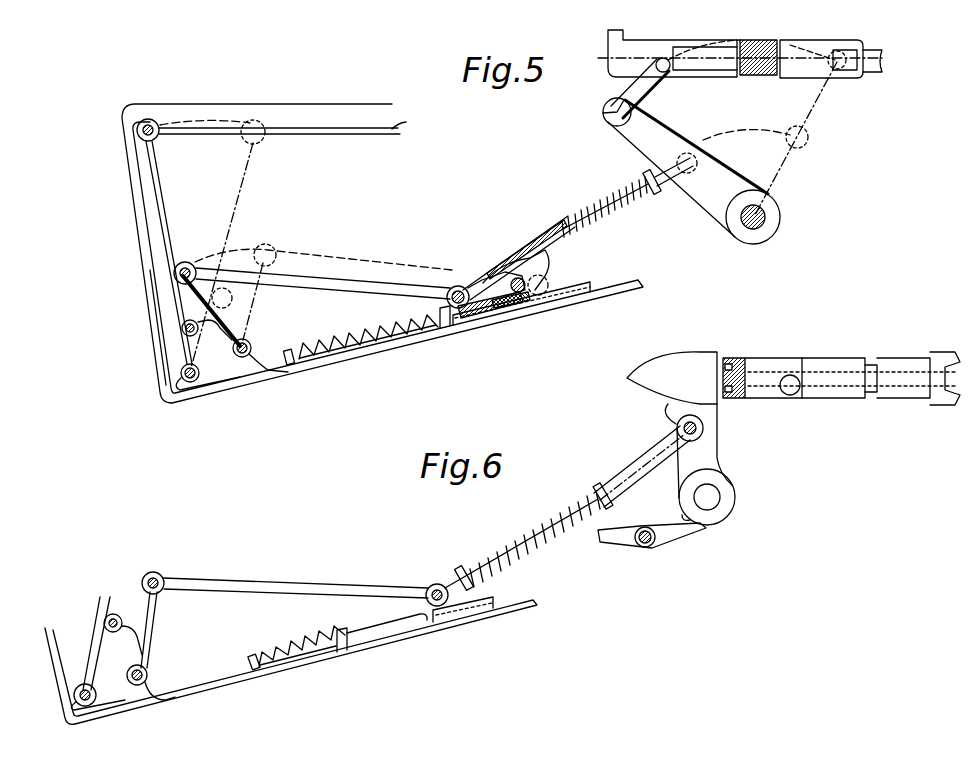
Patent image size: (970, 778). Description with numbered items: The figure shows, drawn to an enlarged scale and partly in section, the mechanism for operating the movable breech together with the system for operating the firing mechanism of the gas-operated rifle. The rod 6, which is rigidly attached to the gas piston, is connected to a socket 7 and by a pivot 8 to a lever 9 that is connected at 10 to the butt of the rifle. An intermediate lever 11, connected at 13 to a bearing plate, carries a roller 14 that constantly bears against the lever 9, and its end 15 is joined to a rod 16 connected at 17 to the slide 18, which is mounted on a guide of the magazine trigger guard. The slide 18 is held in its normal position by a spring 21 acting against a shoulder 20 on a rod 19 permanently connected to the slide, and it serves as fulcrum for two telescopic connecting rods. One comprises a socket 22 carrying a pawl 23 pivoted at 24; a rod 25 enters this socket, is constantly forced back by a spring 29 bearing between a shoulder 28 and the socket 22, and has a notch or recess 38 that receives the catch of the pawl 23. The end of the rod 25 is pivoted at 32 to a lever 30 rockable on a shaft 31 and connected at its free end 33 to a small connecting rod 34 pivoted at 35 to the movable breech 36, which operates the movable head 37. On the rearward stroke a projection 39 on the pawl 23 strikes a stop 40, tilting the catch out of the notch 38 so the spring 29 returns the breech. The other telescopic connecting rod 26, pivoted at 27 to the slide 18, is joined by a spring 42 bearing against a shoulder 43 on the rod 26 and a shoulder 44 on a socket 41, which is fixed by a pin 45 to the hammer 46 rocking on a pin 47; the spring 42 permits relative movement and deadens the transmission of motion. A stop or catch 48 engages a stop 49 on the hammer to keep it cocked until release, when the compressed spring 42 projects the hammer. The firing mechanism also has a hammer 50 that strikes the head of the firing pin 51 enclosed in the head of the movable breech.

In FIG. 5, the rod 6 is at (404, 128).
In FIG. 5, the socket 7 is at (170, 124).
In FIG. 5, the pivot 8 is at (153, 120).
In FIG. 5, the lever 9 is at (158, 200).
In FIG. 6, the lever 9 is at (96, 636).
In FIG. 5, the connection to butt 10 is at (200, 373).
In FIG. 6, the connection to butt 10 is at (94, 688).
In FIG. 5, the intermediate lever 11 is at (228, 318).
In FIG. 6, the intermediate lever 11 is at (150, 623).
In FIG. 5, the connection to bearing plate 13 is at (252, 340).
In FIG. 6, the connection to bearing plate 13 is at (148, 676).
In FIG. 5, the roller 14 is at (199, 334).
In FIG. 6, the roller 14 is at (118, 618).
In FIG. 5, the end of intermediate lever 15 is at (190, 264).
In FIG. 6, the end of intermediate lever 15 is at (162, 576).
In FIG. 5, the rod 16 is at (305, 280).
In FIG. 6, the rod 16 is at (238, 580).
In FIG. 5, the connection to slide 17 is at (452, 288).
In FIG. 5, the slide 18 is at (514, 318).
In FIG. 6, the slide 18 is at (497, 603).
In FIG. 5, the rod 19 is at (400, 330).
In FIG. 6, the rod 19 is at (290, 646).
In FIG. 5, the shoulder 20 is at (291, 352).
In FIG. 6, the shoulder 20 is at (250, 658).
In FIG. 5, the spring 21 is at (320, 344).
In FIG. 6, the spring 21 is at (314, 648).
In FIG. 5, the socket 22 is at (488, 272).
In FIG. 5, the pawl 23 is at (482, 315).
In FIG. 5, the pivot 24 is at (548, 283).
In FIG. 5, the rod 25 is at (540, 240).
In FIG. 6, the telescopic connecting rod 26 is at (516, 520).
In FIG. 6, the pivot 27 is at (438, 582).
In FIG. 5, the shoulder 28 is at (668, 190).
In FIG. 5, the spring 29 is at (612, 210).
In FIG. 5, the lever 30 is at (725, 170).
In FIG. 5, the shaft 31 is at (782, 213).
In FIG. 5, the pivot 32 is at (690, 155).
In FIG. 5, the free end of lever 33 is at (603, 112).
In FIG. 5, the small connecting rod 34 is at (655, 80).
In FIG. 5, the pivot 35 is at (660, 58).
In FIG. 5, the movable breech 36 is at (740, 48).
In FIG. 6, the movable breech 36 is at (790, 395).
In FIG. 5, the movable head 37 is at (830, 46).
In FIG. 6, the movable head 37 is at (905, 395).
In FIG. 5, the notch or recess 38 is at (512, 262).
In FIG. 5, the projection 39 is at (535, 298).
In FIG. 5, the stop 40 is at (520, 305).
In FIG. 6, the socket 41 is at (626, 462).
In FIG. 6, the spring 42 is at (556, 500).
In FIG. 6, the shoulder 43 is at (466, 572).
In FIG. 6, the shoulder 44 is at (604, 485).
In FIG. 6, the pin 45 is at (705, 428).
In FIG. 6, the hammer 46 is at (675, 414).
In FIG. 6, the pin 47 is at (722, 494).
In FIG. 6, the stop or catch 48 is at (690, 535).
In FIG. 6, the stop 49 is at (680, 513).
In FIG. 6, the hammer 50 is at (640, 382).
In FIG. 6, the firing pin 51 is at (722, 372).